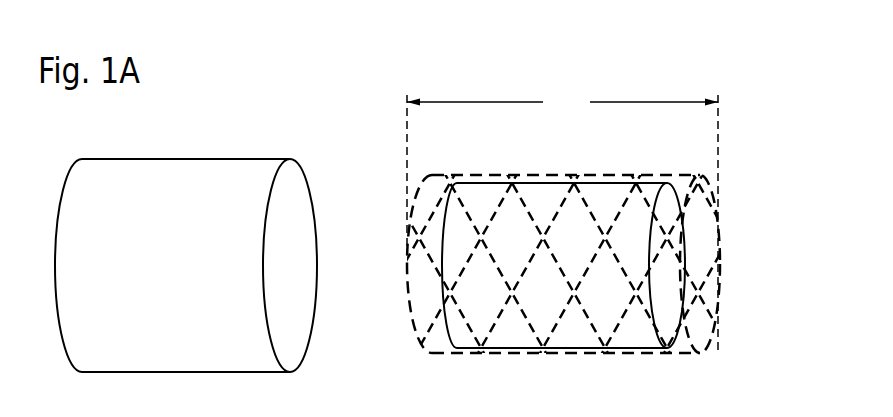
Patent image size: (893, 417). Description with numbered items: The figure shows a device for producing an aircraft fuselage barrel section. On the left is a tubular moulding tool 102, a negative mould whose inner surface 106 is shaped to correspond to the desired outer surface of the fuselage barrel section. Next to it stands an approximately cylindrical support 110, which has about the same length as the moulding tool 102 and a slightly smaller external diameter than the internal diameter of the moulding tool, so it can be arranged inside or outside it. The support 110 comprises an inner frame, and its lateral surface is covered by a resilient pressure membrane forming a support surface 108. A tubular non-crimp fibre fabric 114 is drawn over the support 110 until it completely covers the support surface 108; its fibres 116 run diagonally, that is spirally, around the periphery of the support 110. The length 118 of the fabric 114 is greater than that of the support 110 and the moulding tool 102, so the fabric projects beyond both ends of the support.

The tubular moulding tool 102 is at (213, 232).
The inner surface 106 is at (288, 339).
The support surface 108 is at (541, 193).
The support 110 is at (516, 292).
The tubular non-crimp fibre fabric 114 is at (720, 298).
The fibres 116 is at (502, 327).
The length 118 is at (562, 221).